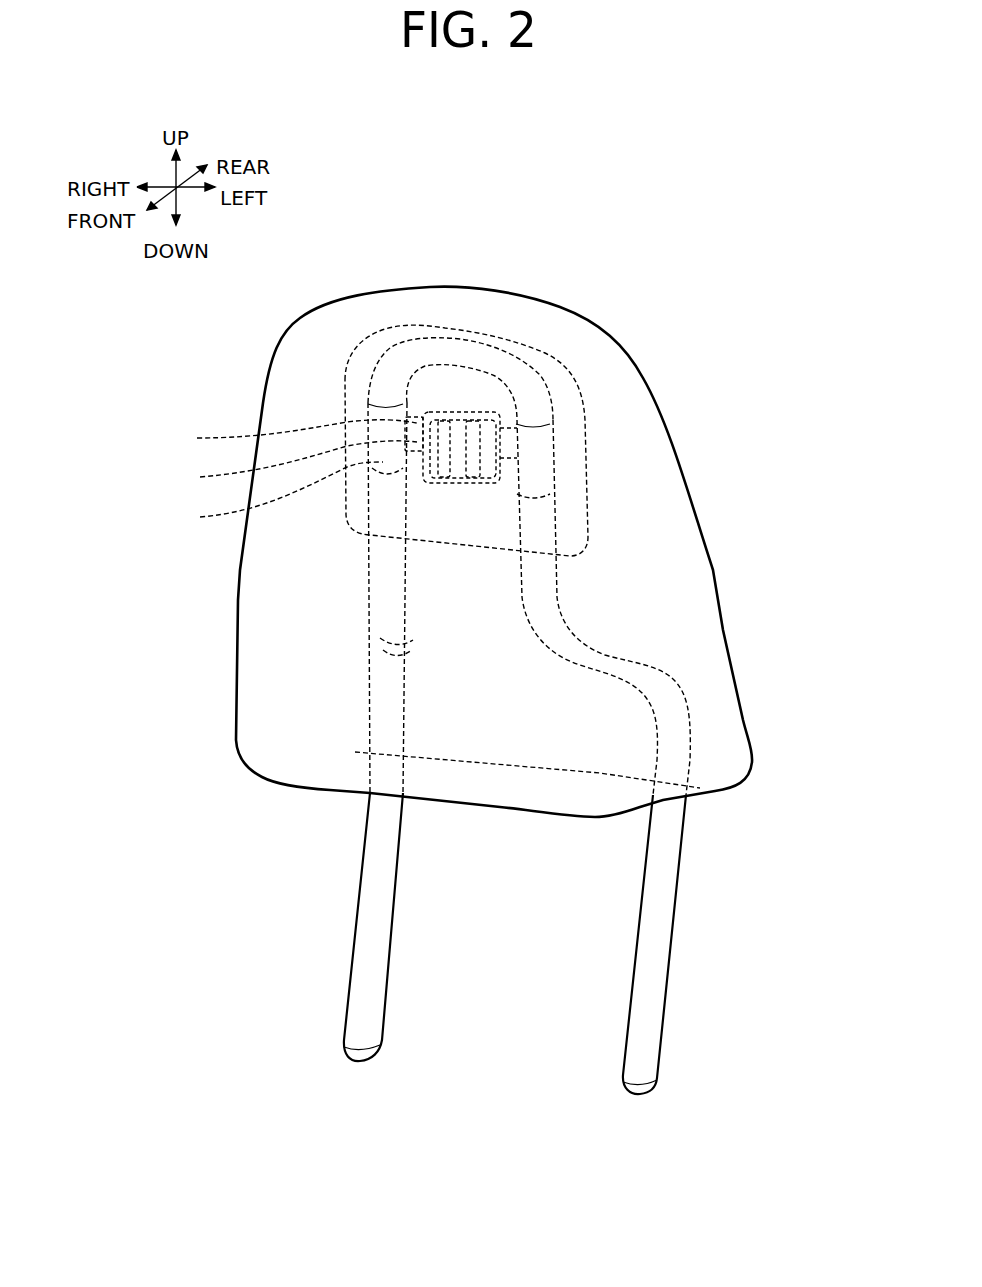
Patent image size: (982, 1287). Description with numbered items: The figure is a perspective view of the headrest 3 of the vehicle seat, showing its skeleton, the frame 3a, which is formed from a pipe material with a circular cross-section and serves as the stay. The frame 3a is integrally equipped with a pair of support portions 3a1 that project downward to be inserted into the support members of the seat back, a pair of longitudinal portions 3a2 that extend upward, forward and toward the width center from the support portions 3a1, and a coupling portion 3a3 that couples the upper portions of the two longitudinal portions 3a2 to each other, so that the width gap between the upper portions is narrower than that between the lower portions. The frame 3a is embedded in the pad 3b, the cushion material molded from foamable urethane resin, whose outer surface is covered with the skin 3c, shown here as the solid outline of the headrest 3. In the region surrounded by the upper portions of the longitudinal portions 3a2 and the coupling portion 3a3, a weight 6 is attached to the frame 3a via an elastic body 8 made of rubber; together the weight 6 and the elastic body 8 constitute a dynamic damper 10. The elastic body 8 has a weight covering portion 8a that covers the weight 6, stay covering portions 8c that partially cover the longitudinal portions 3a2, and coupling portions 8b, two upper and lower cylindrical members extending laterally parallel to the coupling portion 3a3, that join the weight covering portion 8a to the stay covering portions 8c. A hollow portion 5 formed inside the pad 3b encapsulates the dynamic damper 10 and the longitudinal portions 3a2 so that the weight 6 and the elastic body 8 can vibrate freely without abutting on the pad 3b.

The headrest 3 is at (449, 552).
The frame 3a is at (550, 670).
The support portions 3a1 is at (378, 935).
The longitudinal portions 3a2 is at (413, 622).
The coupling portion 3a3 is at (440, 330).
The pad 3b is at (290, 400).
The skin 3c is at (263, 674).
The hollow portion 5 is at (587, 487).
The weight 6 is at (456, 440).
The elastic body 8 is at (272, 476).
The weight covering portion 8a is at (290, 467).
The coupling portions 8b is at (290, 436).
The stay covering portions 8c is at (273, 497).
The dynamic damper 10 is at (482, 358).